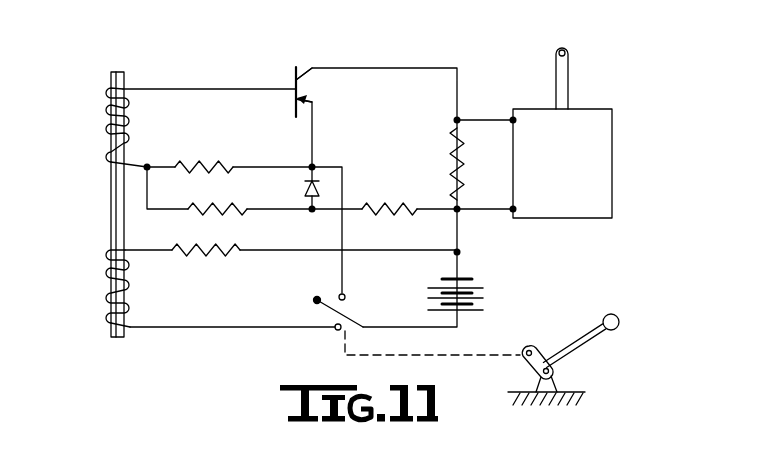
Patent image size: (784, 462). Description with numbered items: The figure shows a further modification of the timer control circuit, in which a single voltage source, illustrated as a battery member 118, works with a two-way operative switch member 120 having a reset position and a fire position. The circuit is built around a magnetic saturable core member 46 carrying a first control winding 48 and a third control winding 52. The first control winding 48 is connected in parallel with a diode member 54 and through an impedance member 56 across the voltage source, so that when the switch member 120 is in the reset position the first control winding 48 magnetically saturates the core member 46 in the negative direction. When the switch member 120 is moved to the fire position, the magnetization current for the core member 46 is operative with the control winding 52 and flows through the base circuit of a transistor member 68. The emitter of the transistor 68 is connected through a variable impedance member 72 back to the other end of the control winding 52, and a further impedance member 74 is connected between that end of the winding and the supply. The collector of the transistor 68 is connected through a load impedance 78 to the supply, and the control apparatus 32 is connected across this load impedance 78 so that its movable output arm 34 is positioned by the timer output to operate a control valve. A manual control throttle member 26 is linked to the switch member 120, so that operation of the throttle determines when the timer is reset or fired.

The magnetic saturable core member 46 is at (117, 79).
The third control winding 52 is at (108, 113).
The first control winding 48 is at (107, 275).
The transistor 68 is at (303, 89).
The variable impedance member 72 is at (195, 163).
The impedance member 74 is at (207, 208).
The diode member 54 is at (305, 190).
The load impedance 78 is at (449, 158).
The control apparatus 32 is at (600, 201).
The movable output arm 34 is at (562, 79).
The impedance member 56 is at (213, 262).
The battery member 118 is at (470, 278).
The two-way operative switch member 120 is at (345, 312).
The manual control throttle member 26 is at (619, 316).